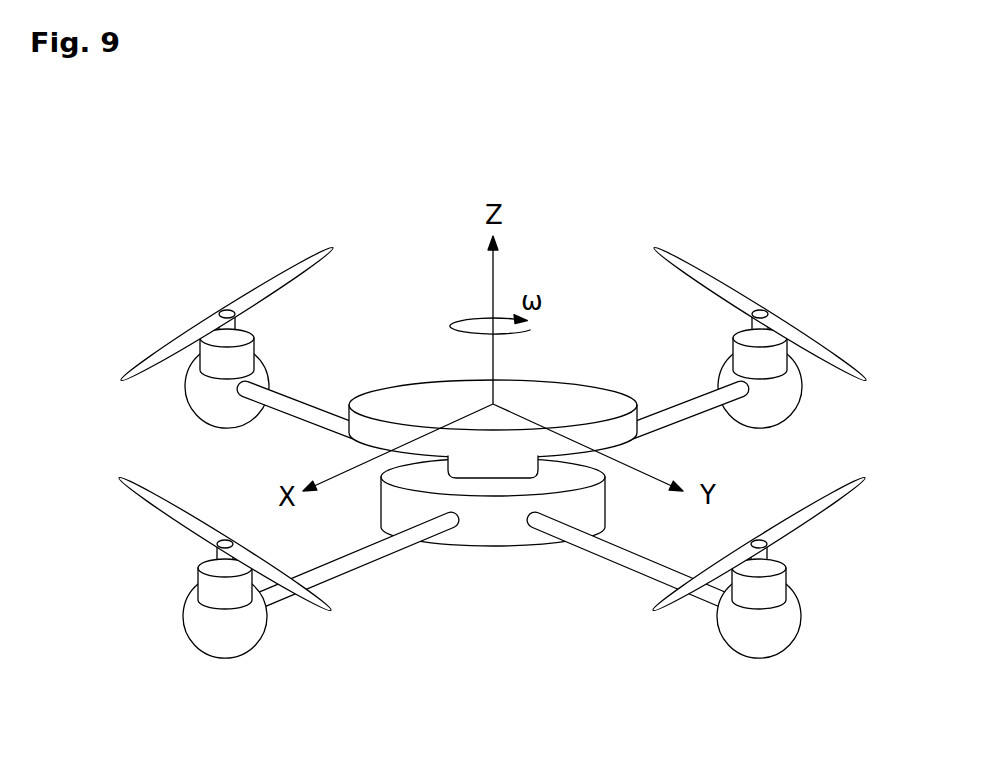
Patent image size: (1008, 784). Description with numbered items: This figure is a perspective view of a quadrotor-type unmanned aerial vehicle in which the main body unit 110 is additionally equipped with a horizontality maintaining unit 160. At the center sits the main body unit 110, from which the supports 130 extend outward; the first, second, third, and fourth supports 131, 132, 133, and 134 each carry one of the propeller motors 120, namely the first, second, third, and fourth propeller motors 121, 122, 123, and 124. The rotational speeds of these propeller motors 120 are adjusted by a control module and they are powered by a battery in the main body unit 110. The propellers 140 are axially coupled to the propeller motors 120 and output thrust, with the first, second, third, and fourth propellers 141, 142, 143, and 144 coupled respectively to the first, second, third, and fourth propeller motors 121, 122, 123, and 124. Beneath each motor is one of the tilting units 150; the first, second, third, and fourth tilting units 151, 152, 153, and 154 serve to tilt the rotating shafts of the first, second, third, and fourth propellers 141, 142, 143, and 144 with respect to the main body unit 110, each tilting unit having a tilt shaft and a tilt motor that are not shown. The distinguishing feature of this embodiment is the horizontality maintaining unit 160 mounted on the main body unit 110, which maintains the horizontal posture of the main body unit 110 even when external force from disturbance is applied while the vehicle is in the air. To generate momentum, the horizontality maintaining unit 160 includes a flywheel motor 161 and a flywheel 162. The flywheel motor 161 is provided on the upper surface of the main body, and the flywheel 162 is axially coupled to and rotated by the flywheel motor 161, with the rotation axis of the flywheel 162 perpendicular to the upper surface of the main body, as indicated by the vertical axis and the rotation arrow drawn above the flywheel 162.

The main body unit 110 is at (482, 532).
The propeller motors 120 is at (142, 577).
The first propeller motor 121 is at (205, 585).
The second propeller motor 122 is at (258, 344).
The third propeller motor 123 is at (731, 344).
The fourth propeller motor 124 is at (790, 573).
The supports 130 is at (338, 593).
The first support 131 is at (337, 575).
The second support 132 is at (303, 404).
The third support 133 is at (671, 408).
The fourth support 134 is at (645, 577).
The propellers 140 is at (225, 517).
The first propeller 141 is at (152, 496).
The second propeller 142 is at (310, 252).
The third propeller 143 is at (678, 252).
The fourth propeller 144 is at (836, 495).
The tilting units 150 is at (223, 667).
The first tilting unit 151 is at (217, 640).
The second tilting unit 152 is at (229, 420).
The third tilting unit 153 is at (752, 420).
The fourth tilting unit 154 is at (778, 630).
The horizontality maintaining unit 160 is at (508, 569).
The flywheel motor 161 is at (505, 468).
The flywheel 162 is at (562, 392).